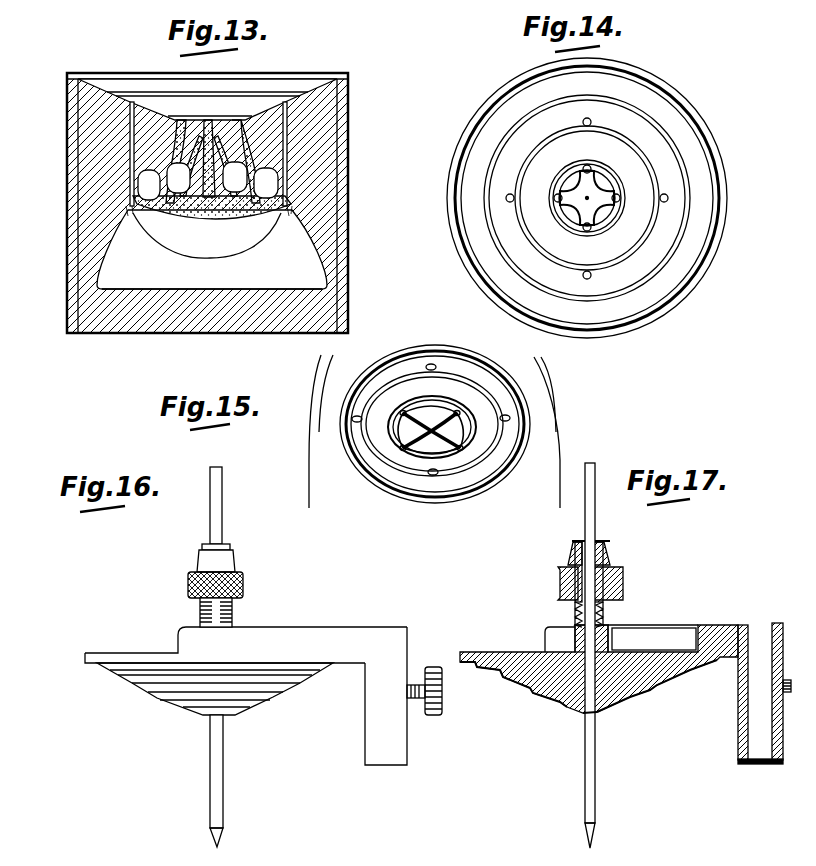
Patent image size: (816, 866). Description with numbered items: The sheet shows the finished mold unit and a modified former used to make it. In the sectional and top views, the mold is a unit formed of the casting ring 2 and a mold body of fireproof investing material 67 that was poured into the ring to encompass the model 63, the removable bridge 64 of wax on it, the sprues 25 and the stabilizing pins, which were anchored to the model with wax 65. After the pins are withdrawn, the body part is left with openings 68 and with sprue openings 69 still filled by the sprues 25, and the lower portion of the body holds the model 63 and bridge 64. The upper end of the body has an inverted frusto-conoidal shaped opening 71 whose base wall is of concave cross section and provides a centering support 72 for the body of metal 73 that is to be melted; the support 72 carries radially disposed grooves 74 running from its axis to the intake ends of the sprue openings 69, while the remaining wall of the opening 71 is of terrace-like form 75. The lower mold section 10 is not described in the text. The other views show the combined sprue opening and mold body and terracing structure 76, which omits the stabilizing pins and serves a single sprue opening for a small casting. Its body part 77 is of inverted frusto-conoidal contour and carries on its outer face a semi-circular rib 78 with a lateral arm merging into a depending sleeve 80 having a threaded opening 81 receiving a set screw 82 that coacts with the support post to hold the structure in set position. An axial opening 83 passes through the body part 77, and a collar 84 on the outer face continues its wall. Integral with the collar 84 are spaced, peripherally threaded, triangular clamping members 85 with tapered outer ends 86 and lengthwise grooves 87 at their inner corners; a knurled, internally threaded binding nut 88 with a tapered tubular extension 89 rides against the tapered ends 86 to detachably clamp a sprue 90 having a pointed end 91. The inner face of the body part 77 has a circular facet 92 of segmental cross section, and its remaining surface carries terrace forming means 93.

In FIG. 13, the casting ring 2 is at (356, 155).
In FIG. 15, the casting ring 2 is at (302, 465).
In FIG. 13, the lower mold section 10 is at (326, 258).
In FIG. 13, the sprue 25 is at (167, 146).
In FIG. 13, the model 63 is at (293, 232).
In FIG. 13, the removable bridge 64 is at (237, 220).
In FIG. 13, the wax 65 is at (137, 213).
In FIG. 13, the investing material 67 is at (147, 309).
In FIG. 13, the opening 68 is at (290, 133).
In FIG. 14, the opening 68 is at (670, 197).
In FIG. 15, the opening 68 is at (432, 476).
In FIG. 13, the sprue opening 69 is at (256, 120).
In FIG. 14, the sprue opening 69 is at (625, 206).
In FIG. 15, the sprue opening 69 is at (402, 410).
In FIG. 13, the inverted frusto-conoidal shaped opening 71 is at (143, 107).
In FIG. 14, the inverted frusto-conoidal shaped opening 71 is at (648, 265).
In FIG. 15, the inverted frusto-conoidal shaped opening 71 is at (509, 396).
In FIG. 13, the centering support 72 is at (220, 120).
In FIG. 14, the centering support 72 is at (600, 185).
In FIG. 15, the centering support 72 is at (433, 417).
In FIG. 13, the body of metal 73 is at (200, 112).
In FIG. 14, the radially disposed groove 74 is at (580, 190).
In FIG. 15, the radially disposed groove 74 is at (438, 440).
In FIG. 14, the terrace-like form 75 is at (667, 235).
In FIG. 15, the terrace-like form 75 is at (381, 365).
In FIG. 17, the combined sprue opening and mold body and terracing structure 76 is at (520, 645).
In FIG. 17, the body part 77 is at (550, 676).
In FIG. 17, the semi-circular rib 78 is at (660, 632).
In FIG. 16, the depending sleeve 80 is at (391, 737).
In FIG. 17, the depending sleeve 80 is at (740, 701).
In FIG. 17, the opening 81 is at (792, 662).
In FIG. 16, the set screw 82 is at (432, 665).
In FIG. 17, the set screw 82 is at (791, 695).
In FIG. 17, the axial opening 83 is at (563, 704).
In FIG. 17, the collar 84 is at (606, 632).
In FIG. 16, the clamping member 85 is at (232, 612).
In FIG. 17, the clamping member 85 is at (575, 612).
In FIG. 16, the tapered outer end 86 is at (205, 546).
In FIG. 17, the tapered outer end 86 is at (612, 548).
In FIG. 17, the groove 87 is at (597, 571).
In FIG. 16, the binding nut 88 is at (188, 585).
In FIG. 17, the binding nut 88 is at (620, 583).
In FIG. 16, the tapered tubular extension 89 is at (196, 560).
In FIG. 17, the tapered tubular extension 89 is at (572, 546).
In FIG. 16, the sprue 90 is at (215, 762).
In FIG. 17, the sprue 90 is at (596, 749).
In FIG. 16, the pointed end 91 is at (225, 832).
In FIG. 17, the pointed end 91 is at (598, 833).
In FIG. 16, the circular facet 92 is at (207, 713).
In FIG. 17, the circular facet 92 is at (578, 714).
In FIG. 16, the terrace forming means 93 is at (265, 697).
In FIG. 17, the terrace forming means 93 is at (650, 690).